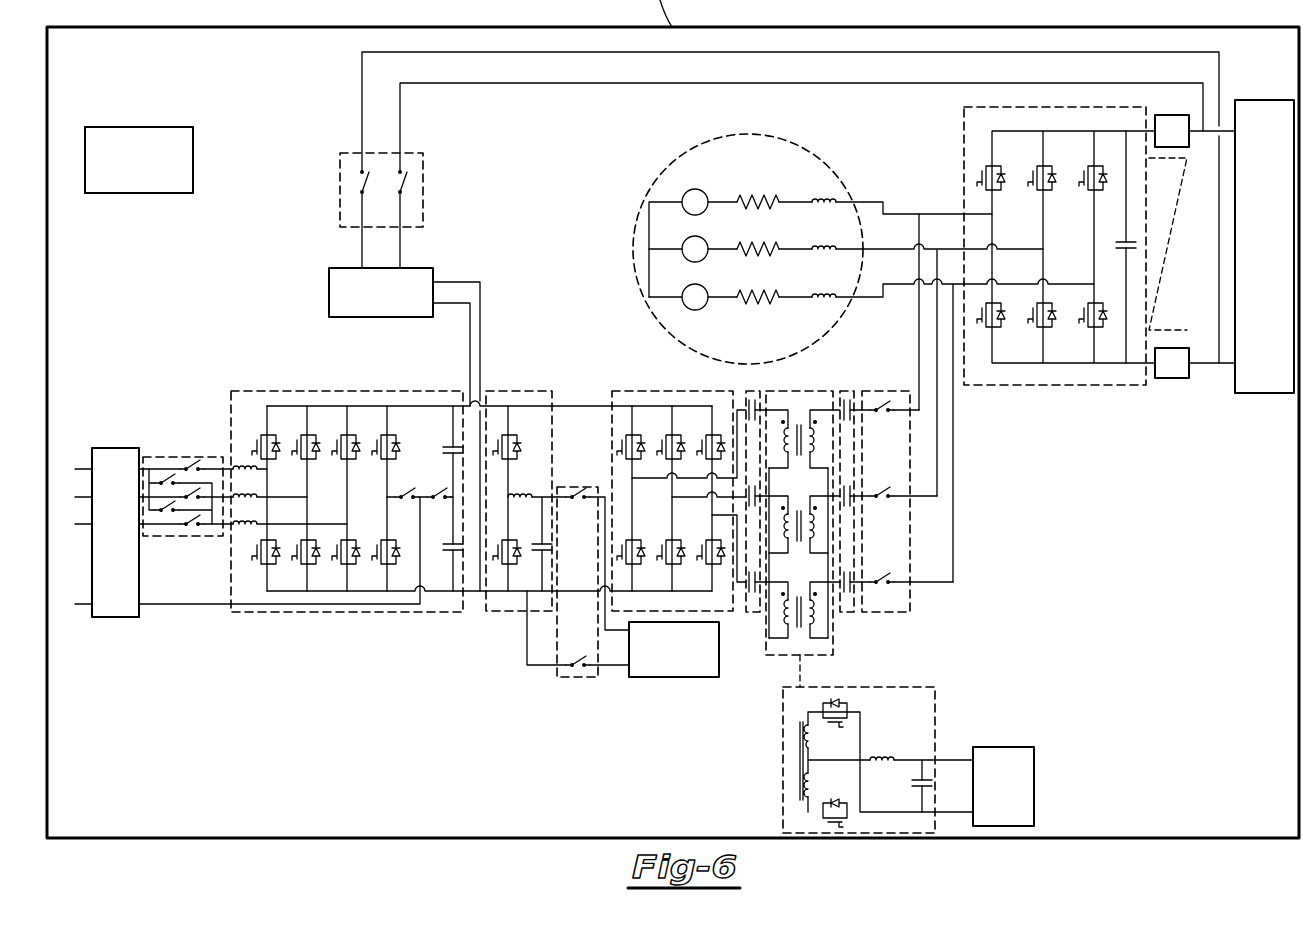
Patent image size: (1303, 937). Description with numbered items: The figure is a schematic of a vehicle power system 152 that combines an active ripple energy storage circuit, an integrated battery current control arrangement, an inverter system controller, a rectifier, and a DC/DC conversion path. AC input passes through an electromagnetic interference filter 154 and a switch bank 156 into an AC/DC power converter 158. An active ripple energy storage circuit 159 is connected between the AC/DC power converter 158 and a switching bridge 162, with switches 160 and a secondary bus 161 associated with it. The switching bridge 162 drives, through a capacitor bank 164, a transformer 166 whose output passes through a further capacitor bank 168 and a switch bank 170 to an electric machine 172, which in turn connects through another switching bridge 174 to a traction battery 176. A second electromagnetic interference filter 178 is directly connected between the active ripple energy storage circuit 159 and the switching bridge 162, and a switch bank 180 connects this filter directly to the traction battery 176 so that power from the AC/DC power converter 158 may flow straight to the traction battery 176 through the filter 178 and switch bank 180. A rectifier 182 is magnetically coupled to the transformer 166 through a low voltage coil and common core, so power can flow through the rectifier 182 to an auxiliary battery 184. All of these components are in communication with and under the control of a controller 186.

The system 152 is at (158, 730).
The electromagnetic interference filter 154 is at (116, 448).
The switch bank 156 is at (185, 457).
The AC/DC power converter 158 is at (294, 390).
The active ripple energy storage circuit 159 is at (520, 390).
The switches 160 is at (580, 487).
The secondary bus 161 is at (672, 677).
The switching bridge 162 is at (633, 390).
The capacitor bank 164 is at (753, 612).
The transformer 166 is at (800, 390).
The capacitor bank 168 is at (847, 612).
The switch bank 170 is at (886, 612).
The electric machine 172 is at (633, 252).
The switching bridge 174 is at (964, 118).
The traction battery 176 is at (1258, 393).
The electromagnetic interference filter 178 is at (329, 292).
The switch bank 180 is at (340, 192).
The rectifier 182 is at (935, 708).
The auxiliary battery 184 is at (1034, 787).
The controller 186 is at (139, 127).